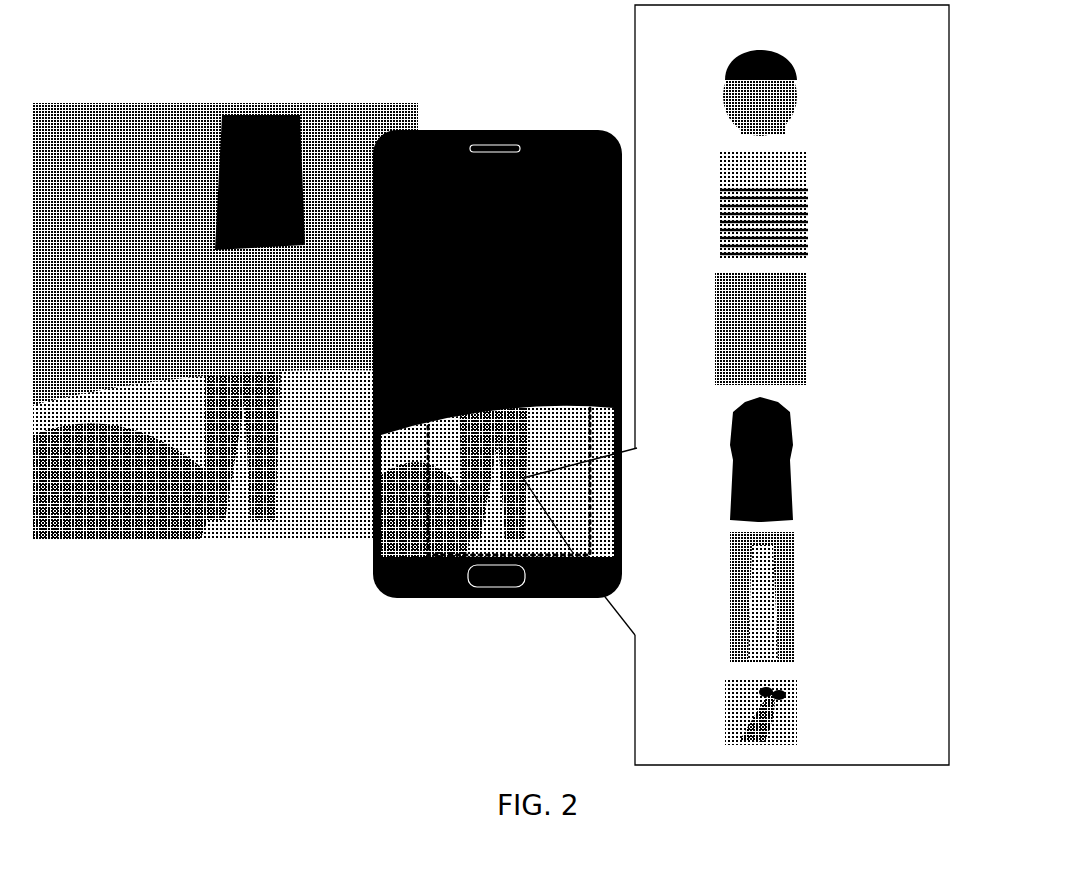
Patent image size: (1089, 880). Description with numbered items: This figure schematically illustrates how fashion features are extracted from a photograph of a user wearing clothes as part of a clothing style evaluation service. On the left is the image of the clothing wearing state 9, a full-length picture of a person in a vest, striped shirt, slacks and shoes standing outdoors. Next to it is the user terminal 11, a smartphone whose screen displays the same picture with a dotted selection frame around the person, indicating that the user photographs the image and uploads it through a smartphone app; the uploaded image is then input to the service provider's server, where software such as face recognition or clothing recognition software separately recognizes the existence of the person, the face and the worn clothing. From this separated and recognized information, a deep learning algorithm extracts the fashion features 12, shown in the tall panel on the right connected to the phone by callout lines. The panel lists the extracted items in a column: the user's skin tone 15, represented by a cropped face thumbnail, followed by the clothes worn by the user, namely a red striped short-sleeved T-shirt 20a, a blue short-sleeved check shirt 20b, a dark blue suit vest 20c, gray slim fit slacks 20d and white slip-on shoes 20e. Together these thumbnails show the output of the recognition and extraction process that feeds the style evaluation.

The image of the clothing wearing state 9 is at (165, 102).
The user terminal 11 is at (458, 125).
The fashion features 12 is at (952, 257).
The user's skin tone 15 is at (780, 92).
The red stripped short-sleeved T-shirt 20a is at (780, 212).
The blue short sleeves check shirt 20b is at (780, 340).
The dark blue suit vest 20c is at (790, 468).
The gray slim fit slacks 20d is at (782, 590).
The white slip-on shoes 20e is at (785, 712).